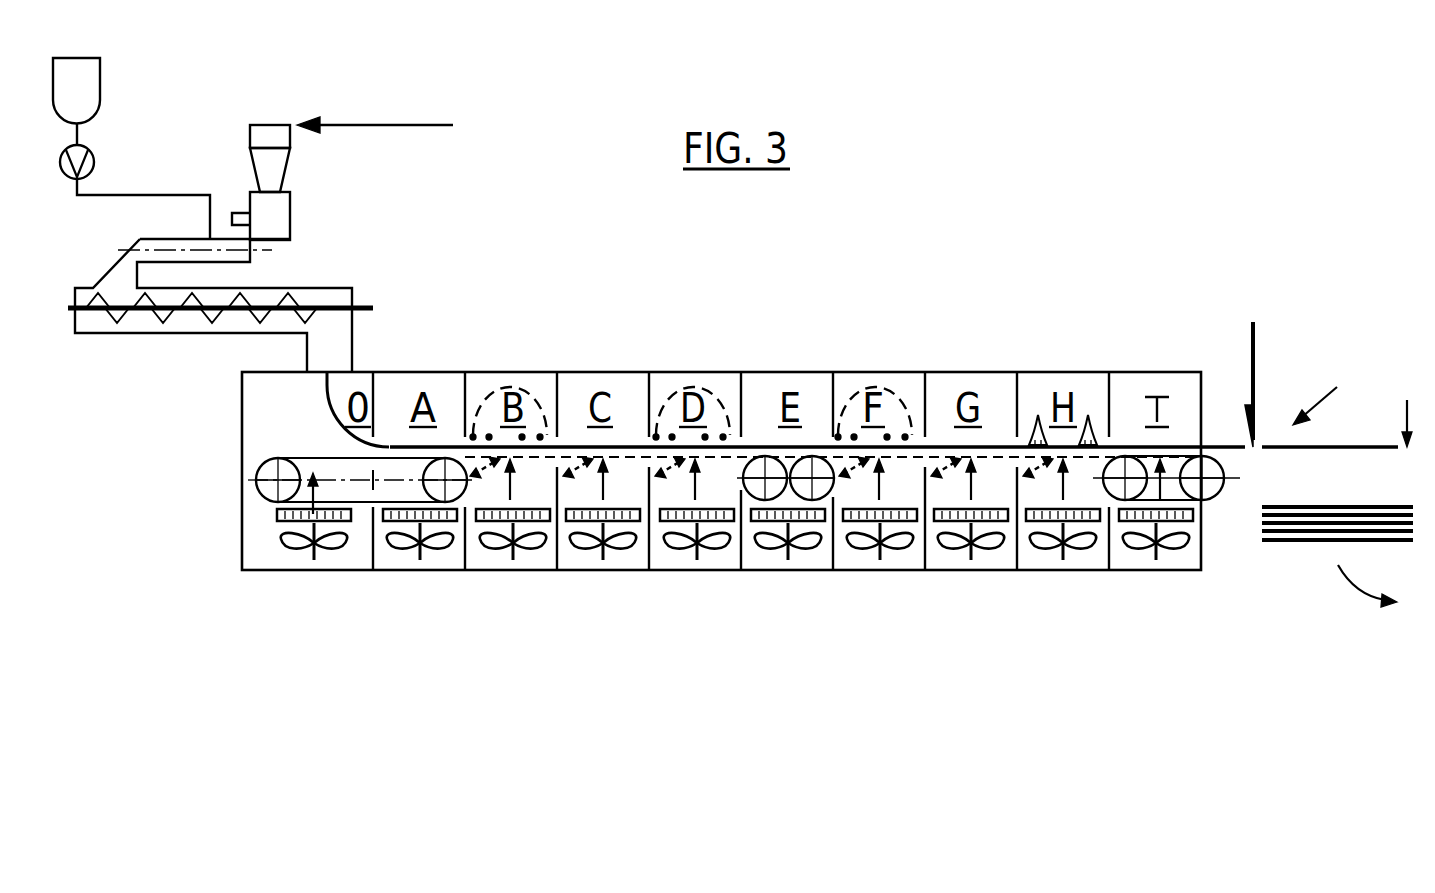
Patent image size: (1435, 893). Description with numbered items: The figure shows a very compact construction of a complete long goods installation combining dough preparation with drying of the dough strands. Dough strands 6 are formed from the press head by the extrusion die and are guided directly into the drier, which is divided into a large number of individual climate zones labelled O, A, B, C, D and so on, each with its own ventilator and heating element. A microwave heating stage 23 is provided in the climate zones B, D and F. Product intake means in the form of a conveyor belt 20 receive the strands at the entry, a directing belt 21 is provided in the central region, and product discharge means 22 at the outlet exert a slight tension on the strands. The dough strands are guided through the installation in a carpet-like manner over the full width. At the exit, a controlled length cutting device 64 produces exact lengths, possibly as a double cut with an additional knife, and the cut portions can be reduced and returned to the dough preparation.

The dough strands 6 is at (325, 396).
The conveyor belt 20 is at (273, 490).
The directing belt 21 is at (765, 490).
The product discharge means 22 is at (1215, 490).
The microwave heating stage 23 is at (497, 420).
The controlled length cutting device 64 is at (1257, 360).